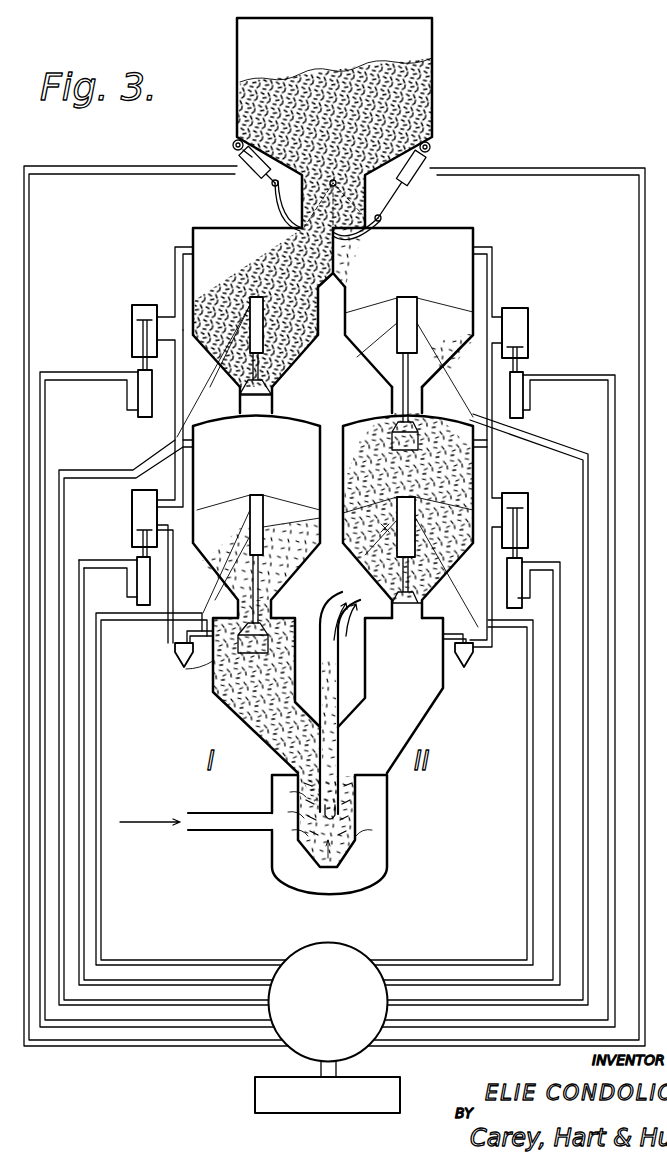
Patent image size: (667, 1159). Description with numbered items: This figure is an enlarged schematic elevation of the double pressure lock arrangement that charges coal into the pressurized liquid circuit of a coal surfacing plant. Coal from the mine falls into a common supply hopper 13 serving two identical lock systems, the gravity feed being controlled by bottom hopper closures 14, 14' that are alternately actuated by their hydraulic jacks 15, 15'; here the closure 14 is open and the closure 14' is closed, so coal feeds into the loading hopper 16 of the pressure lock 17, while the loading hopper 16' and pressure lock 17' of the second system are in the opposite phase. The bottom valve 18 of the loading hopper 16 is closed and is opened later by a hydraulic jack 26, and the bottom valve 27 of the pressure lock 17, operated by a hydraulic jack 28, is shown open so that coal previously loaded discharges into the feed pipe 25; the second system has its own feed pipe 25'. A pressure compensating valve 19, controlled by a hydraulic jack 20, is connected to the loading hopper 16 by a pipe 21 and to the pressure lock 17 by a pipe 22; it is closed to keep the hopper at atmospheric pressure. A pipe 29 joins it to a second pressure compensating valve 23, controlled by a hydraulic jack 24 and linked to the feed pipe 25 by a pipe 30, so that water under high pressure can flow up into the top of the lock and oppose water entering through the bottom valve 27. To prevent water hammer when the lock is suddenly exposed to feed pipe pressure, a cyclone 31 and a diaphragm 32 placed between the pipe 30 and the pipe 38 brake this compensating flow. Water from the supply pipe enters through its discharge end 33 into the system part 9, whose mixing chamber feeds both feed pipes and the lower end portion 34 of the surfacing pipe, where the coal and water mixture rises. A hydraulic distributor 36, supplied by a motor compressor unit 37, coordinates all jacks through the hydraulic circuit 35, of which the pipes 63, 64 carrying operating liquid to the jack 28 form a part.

The system part 9 is at (401, 835).
The supply hopper 13 is at (258, 39).
The bottom hopper closure 14 is at (273, 205).
The bottom hopper closure 14' is at (367, 238).
The hydraulic jack 15 is at (156, 593).
The hydraulic jack 15' is at (506, 594).
The loading hopper 16 is at (250, 327).
The loading hopper 16' is at (426, 322).
The pressure lock 17 is at (268, 510).
The pressure lock 17' is at (436, 522).
The bottom valve 18 is at (262, 406).
The pressure compensating valve 19 is at (132, 331).
The hydraulic jack 20 is at (138, 399).
The pipe 21 is at (175, 273).
The pipe 22 is at (173, 435).
The pressure compensating valve 23 is at (132, 514).
The hydraulic jack 24 is at (137, 584).
The feed pipe 25 is at (250, 695).
The feed pipe 25' is at (410, 695).
The hydraulic jack 26 is at (258, 329).
The bottom valve 27 is at (262, 643).
The hydraulic jack 28 is at (263, 528).
The pipe 29 is at (175, 477).
The pipe 30 is at (173, 579).
The cyclone 31 is at (175, 656).
The diaphragm 32 is at (186, 633).
The discharge end of supply pipe 33 is at (207, 824).
The lower end portion of surfacing pipe 34 is at (330, 696).
The hydraulic circuit 35 is at (214, 1007).
The hydraulic distributor 36 is at (300, 1040).
The motor compressor unit 37 is at (305, 1098).
The pipe 38 is at (200, 665).
The pipe 63 is at (115, 958).
The pipe 64 is at (152, 962).